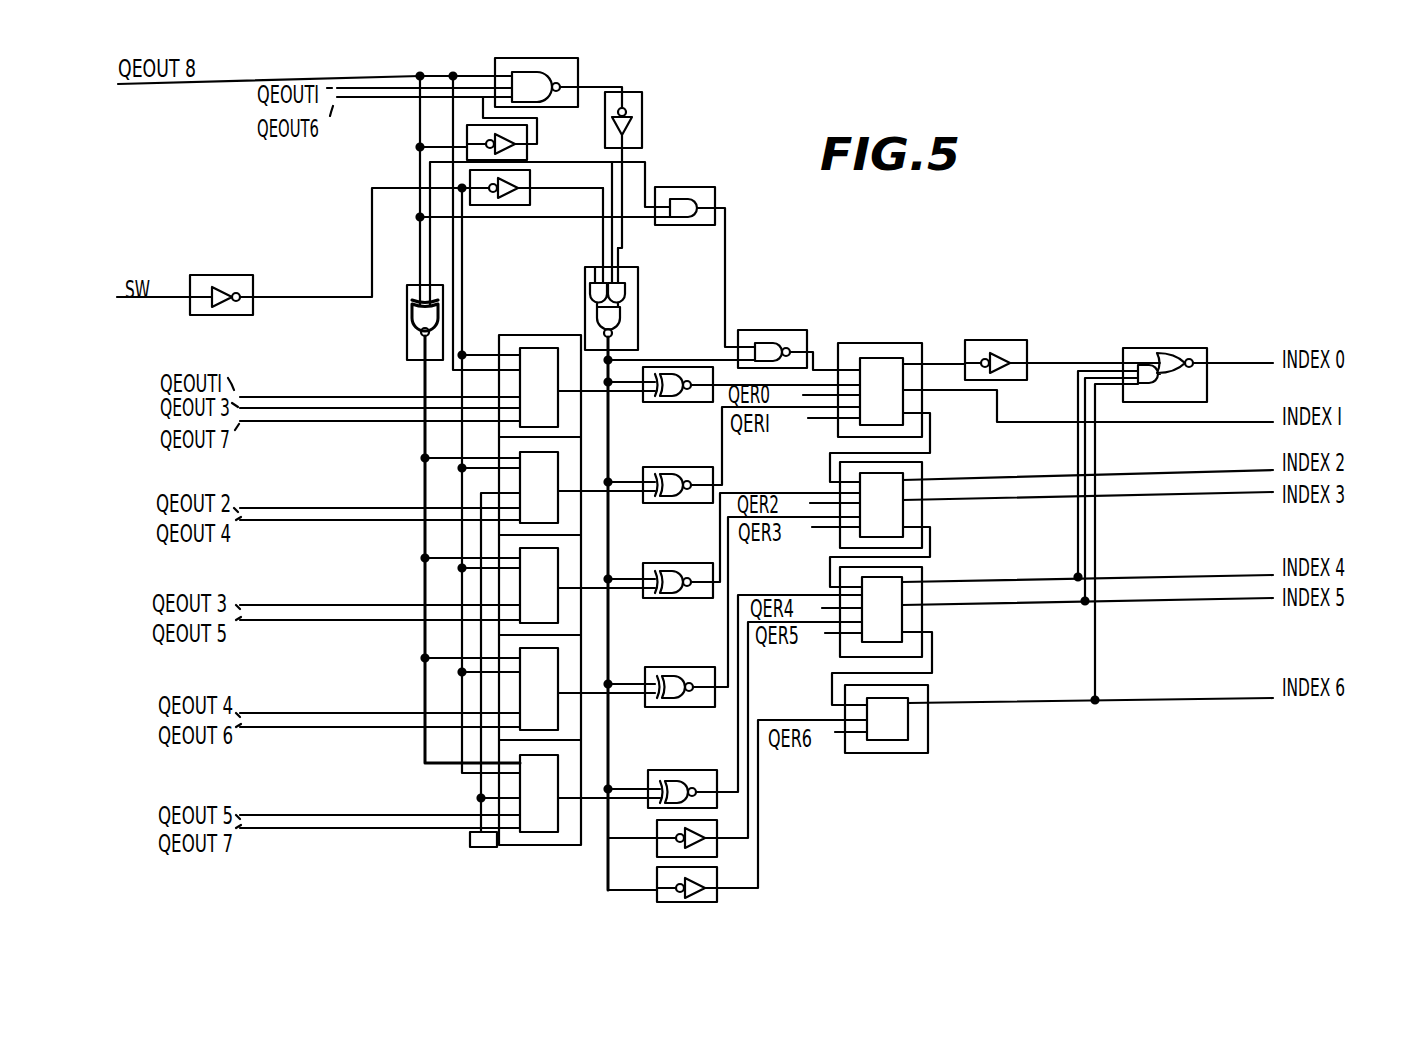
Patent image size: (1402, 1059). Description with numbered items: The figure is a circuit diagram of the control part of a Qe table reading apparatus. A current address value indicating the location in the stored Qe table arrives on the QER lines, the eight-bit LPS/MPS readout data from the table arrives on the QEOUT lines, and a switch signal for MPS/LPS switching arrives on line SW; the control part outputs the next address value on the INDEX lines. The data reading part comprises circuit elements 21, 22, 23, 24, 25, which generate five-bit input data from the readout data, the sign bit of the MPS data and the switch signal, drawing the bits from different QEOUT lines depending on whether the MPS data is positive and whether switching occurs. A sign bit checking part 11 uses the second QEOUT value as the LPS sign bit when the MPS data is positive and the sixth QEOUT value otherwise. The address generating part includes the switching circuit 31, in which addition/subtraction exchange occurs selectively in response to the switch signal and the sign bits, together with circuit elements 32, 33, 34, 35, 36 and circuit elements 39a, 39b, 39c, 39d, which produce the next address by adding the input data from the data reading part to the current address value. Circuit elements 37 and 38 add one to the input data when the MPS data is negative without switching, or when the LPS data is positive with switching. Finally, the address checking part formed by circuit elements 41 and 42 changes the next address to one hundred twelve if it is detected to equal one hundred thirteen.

The sign bit checking part 11 is at (580, 70).
The circuit element 21 is at (540, 335).
The circuit element 22 is at (558, 463).
The circuit element 23 is at (558, 560).
The circuit element 24 is at (558, 662).
The circuit element 25 is at (540, 835).
The switching circuit 31 is at (640, 316).
The circuit element 32 is at (660, 403).
The circuit element 33 is at (663, 504).
The circuit element 34 is at (666, 599).
The circuit element 35 is at (666, 708).
The circuit element 36 is at (684, 770).
The circuit element 37 is at (717, 197).
The circuit element 38 is at (772, 328).
The circuit element 39a is at (882, 343).
The circuit element 39b is at (922, 468).
The circuit element 39c is at (924, 570).
The circuit element 39d is at (930, 697).
The circuit element 41 is at (993, 340).
The circuit element 42 is at (1160, 348).